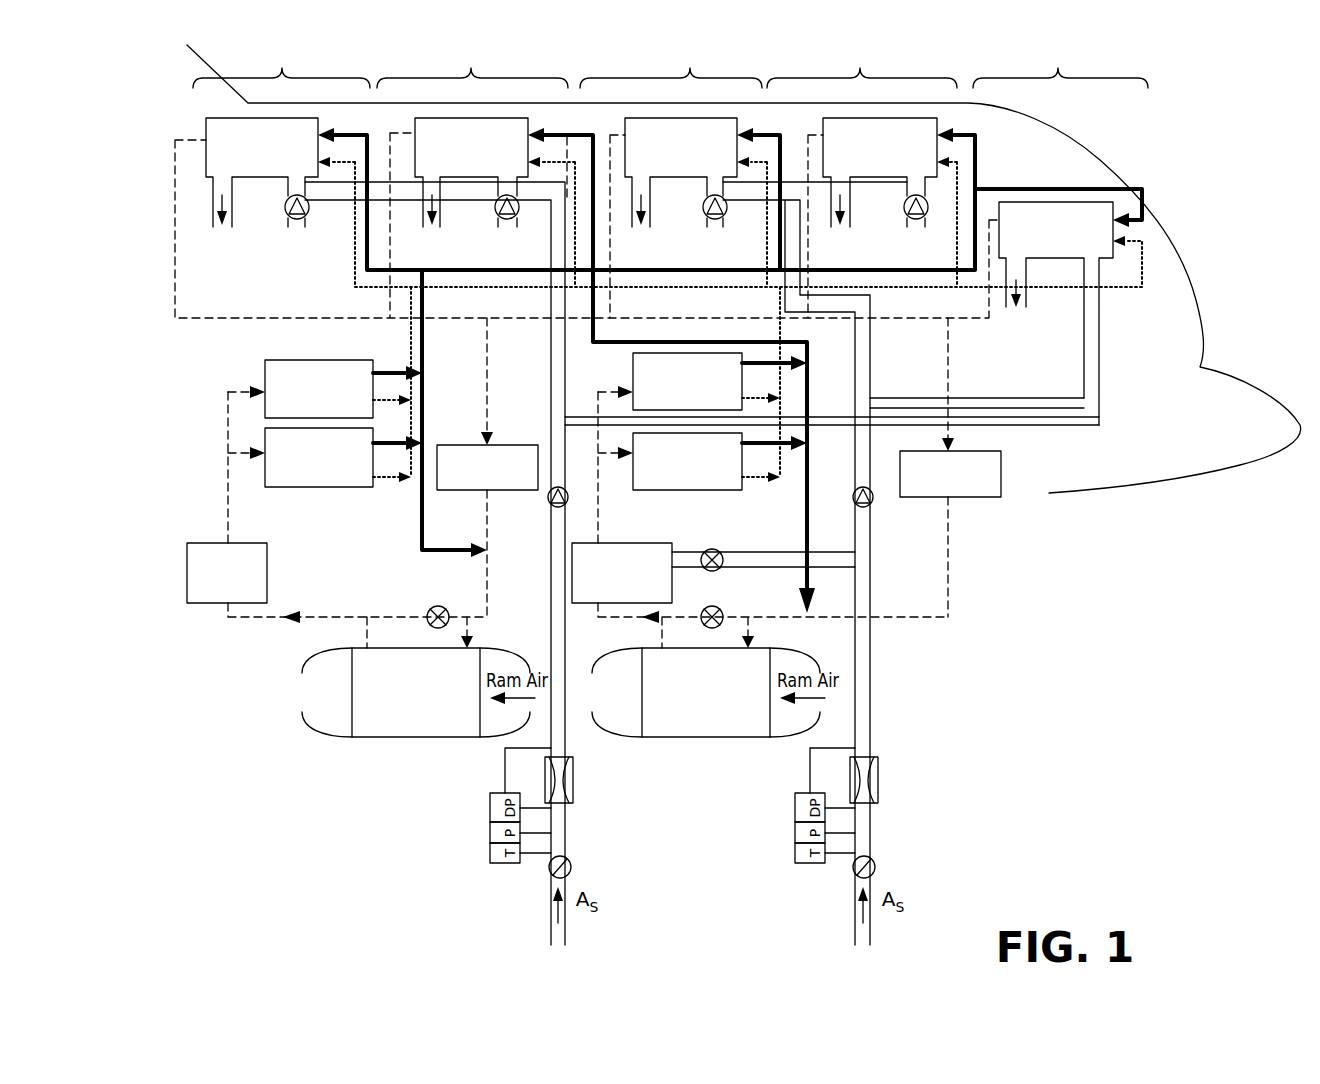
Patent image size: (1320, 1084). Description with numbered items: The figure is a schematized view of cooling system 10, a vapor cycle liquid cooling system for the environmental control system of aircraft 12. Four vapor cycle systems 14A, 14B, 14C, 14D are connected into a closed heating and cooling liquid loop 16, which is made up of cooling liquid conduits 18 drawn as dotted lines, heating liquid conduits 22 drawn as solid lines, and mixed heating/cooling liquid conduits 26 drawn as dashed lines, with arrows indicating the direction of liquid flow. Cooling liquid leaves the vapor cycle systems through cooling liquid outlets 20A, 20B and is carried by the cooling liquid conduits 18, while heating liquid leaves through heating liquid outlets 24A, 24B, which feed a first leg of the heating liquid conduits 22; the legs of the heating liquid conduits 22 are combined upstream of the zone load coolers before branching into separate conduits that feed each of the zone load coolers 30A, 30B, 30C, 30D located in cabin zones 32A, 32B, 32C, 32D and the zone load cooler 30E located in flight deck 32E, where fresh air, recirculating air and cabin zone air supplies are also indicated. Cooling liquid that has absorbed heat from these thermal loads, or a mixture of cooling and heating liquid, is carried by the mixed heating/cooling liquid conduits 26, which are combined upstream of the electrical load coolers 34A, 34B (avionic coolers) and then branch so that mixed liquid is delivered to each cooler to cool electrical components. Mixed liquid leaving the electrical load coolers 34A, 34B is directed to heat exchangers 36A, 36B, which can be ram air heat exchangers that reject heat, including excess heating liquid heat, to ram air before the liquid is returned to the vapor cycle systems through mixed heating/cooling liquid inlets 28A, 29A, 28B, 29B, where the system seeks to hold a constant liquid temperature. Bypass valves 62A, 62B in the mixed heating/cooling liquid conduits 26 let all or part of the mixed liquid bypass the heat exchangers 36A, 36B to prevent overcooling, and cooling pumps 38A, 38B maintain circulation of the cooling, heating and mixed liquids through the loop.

The cooling system 10 is at (172, 98).
The aircraft 12 is at (744, 269).
The vapor cycle system 14A is at (319, 389).
The vapor cycle system 14B is at (319, 457).
The vapor cycle system 14C is at (687, 381).
The vapor cycle system 14D is at (687, 461).
The closed heating and cooling liquid loop 16 is at (986, 170).
The cooling liquid conduits 18 is at (410, 338).
The cooling liquid outlet 20A is at (380, 405).
The cooling liquid outlet 20B is at (387, 482).
The heating liquid conduits 22 is at (418, 528).
The heating liquid outlet 24A is at (380, 378).
The heating liquid outlet 24B is at (767, 447).
The mixed heating/cooling liquid conduits 26 is at (175, 307).
The mixed heating/cooling liquid inlet 28A is at (381, 343).
The mixed heating/cooling liquid inlet 29A is at (238, 390).
The mixed heating/cooling liquid inlet 28B is at (420, 461).
The mixed heating/cooling liquid inlet 29B is at (238, 452).
The zone load cooler 30A is at (262, 189).
The zone load cooler 30B is at (471, 189).
The zone load cooler 30C is at (681, 191).
The zone load cooler 30D is at (880, 191).
The zone load cooler 30E is at (1065, 313).
The cabin zone 32A is at (281, 64).
The cabin zone 32B is at (472, 64).
The cabin zone 32C is at (671, 64).
The cabin zone 32D is at (862, 64).
The flight deck 32E is at (1060, 64).
The electrical load cooler 34A is at (487, 467).
The electrical load cooler 34B is at (950, 474).
The heat exchanger 36A is at (416, 692).
The heat exchanger 36B is at (706, 692).
The cooling pump 38A is at (227, 573).
The cooling pump 38B is at (713, 573).
The bypass valve 62A is at (431, 606).
The bypass valve 62B is at (708, 608).